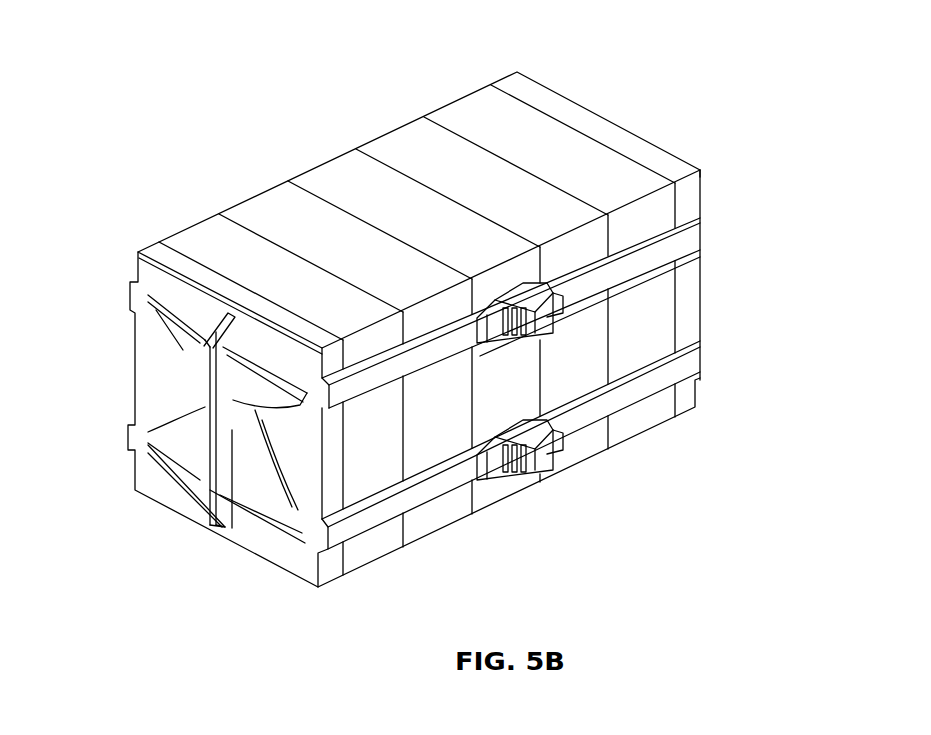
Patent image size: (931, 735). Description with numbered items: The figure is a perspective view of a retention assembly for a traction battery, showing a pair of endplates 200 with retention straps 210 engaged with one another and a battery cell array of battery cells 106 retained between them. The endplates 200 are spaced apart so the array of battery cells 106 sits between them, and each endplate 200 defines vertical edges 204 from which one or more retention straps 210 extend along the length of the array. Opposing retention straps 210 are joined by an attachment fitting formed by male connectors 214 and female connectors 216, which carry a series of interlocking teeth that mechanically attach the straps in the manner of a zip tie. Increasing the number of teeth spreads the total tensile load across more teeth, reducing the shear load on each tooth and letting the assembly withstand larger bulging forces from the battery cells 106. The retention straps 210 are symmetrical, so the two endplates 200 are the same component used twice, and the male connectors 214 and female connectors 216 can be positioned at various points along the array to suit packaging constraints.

The endplate 200 is at (160, 254).
The battery cell 106 is at (330, 182).
The retention strap 210 is at (437, 348).
The vertical edge 204 is at (138, 358).
The male connector 214 is at (522, 300).
The female connector 216 is at (615, 348).